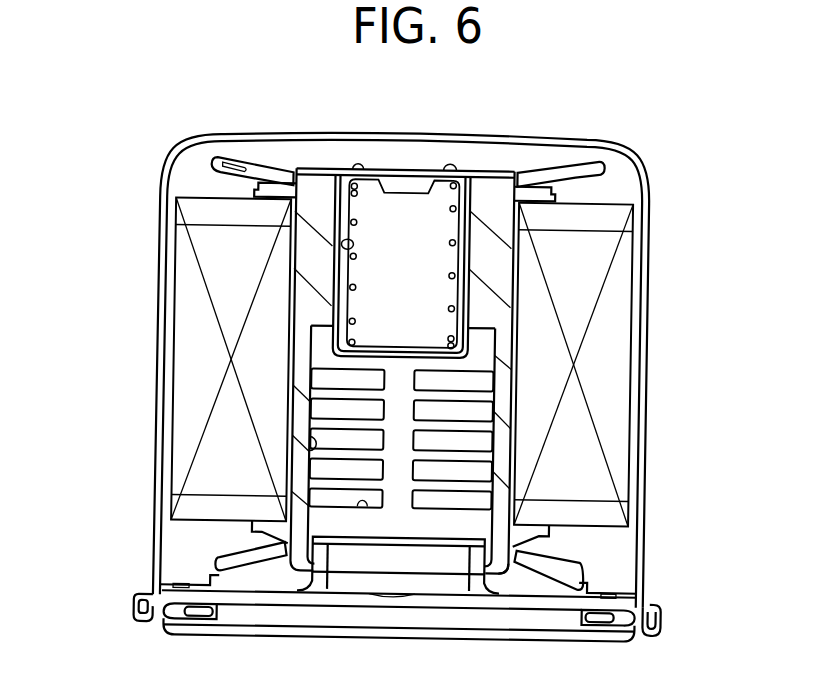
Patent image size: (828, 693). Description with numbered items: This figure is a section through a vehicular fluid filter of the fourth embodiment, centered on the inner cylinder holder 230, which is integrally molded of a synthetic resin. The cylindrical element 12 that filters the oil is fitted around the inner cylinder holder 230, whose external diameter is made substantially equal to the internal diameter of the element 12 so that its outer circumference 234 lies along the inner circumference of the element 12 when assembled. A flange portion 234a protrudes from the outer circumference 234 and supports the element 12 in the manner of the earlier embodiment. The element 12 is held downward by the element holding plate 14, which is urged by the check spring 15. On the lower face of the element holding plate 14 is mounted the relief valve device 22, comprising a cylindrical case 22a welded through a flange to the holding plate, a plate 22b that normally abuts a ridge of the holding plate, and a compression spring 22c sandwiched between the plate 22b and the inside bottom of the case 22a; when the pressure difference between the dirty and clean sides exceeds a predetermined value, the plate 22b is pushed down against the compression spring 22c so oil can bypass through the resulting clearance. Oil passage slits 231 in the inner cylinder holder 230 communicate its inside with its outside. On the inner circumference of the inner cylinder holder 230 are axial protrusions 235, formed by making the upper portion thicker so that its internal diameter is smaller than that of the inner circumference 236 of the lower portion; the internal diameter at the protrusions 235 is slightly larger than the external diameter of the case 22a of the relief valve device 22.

The element 12 is at (613, 380).
The element holding plate 14 is at (318, 167).
The check spring 15 is at (554, 162).
The relief valve device 22 is at (480, 345).
The cylindrical case 22a is at (322, 338).
The plate 22b is at (383, 194).
The compression spring 22c is at (446, 276).
The inner cylinder holder 230 is at (488, 200).
The oil passage slits 231 is at (366, 500).
The outer circumference 234 is at (511, 270).
The flange portion 234a is at (535, 537).
The protrusions 235 is at (339, 249).
The inner circumference 236 is at (306, 447).